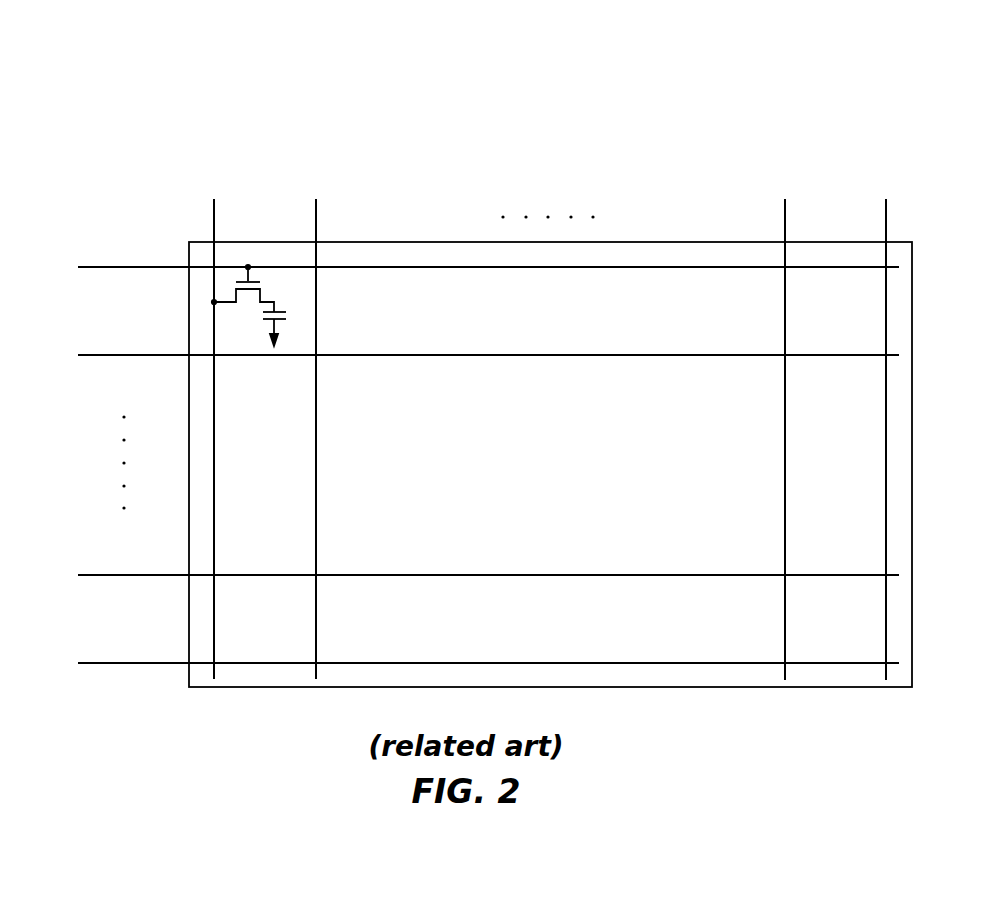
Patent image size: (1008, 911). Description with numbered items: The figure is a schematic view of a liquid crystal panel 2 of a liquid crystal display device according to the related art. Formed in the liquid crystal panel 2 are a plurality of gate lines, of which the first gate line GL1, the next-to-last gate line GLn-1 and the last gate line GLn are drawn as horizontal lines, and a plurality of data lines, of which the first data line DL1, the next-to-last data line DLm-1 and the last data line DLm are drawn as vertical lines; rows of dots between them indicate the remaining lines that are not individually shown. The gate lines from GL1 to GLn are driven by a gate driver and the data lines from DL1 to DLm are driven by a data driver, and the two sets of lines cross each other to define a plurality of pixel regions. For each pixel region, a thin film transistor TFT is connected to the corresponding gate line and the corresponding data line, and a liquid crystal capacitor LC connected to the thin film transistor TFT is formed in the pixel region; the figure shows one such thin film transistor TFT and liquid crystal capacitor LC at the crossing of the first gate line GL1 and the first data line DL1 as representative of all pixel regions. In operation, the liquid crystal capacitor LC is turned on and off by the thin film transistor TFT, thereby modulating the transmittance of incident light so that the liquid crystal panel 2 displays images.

The liquid crystal panel 2 is at (735, 138).
The first data line DL1 is at (212, 423).
The (m-1)th data line DLm-1 is at (787, 425).
The m-th data line DLm is at (885, 425).
The first gate line GL1 is at (466, 268).
The (n-1)th gate line GLn-1 is at (454, 575).
The n-th gate line GLn is at (462, 664).
The thin film transistor TFT is at (243, 296).
The liquid crystal capacitor LC is at (286, 326).